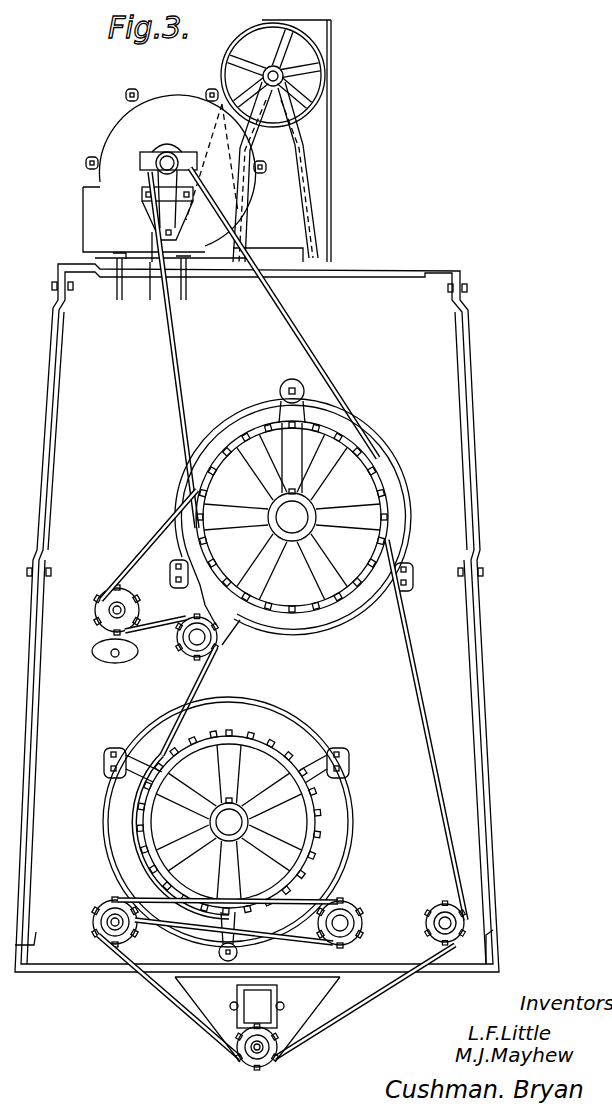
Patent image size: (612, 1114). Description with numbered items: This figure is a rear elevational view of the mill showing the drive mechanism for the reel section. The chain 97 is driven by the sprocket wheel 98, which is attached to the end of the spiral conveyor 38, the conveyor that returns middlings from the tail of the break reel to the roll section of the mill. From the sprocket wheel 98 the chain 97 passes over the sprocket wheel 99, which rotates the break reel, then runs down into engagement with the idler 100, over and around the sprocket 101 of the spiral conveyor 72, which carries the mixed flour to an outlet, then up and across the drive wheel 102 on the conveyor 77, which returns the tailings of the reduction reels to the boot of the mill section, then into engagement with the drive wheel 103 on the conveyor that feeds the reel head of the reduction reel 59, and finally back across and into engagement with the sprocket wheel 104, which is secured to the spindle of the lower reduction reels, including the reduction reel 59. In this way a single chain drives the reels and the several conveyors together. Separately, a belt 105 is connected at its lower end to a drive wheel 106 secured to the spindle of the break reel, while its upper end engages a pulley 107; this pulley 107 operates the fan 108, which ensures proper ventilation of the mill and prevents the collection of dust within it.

The fan 108 is at (143, 91).
The pulley 107 is at (161, 146).
The belt 105 is at (167, 341).
The drive wheel 106 is at (247, 427).
The sprocket wheel 99 is at (327, 430).
The spiral conveyor 38 is at (116, 607).
The sprocket wheel 98 is at (188, 655).
The chain 97 is at (411, 661).
The reduction reel 59 is at (330, 726).
The sprocket wheel 104 is at (147, 812).
The conveyor 77 is at (106, 921).
The drive wheel 102 is at (126, 934).
The drive wheel 103 is at (358, 920).
The idler 100 is at (458, 922).
The spiral conveyor 72 is at (240, 1052).
The sprocket 101 is at (256, 1068).